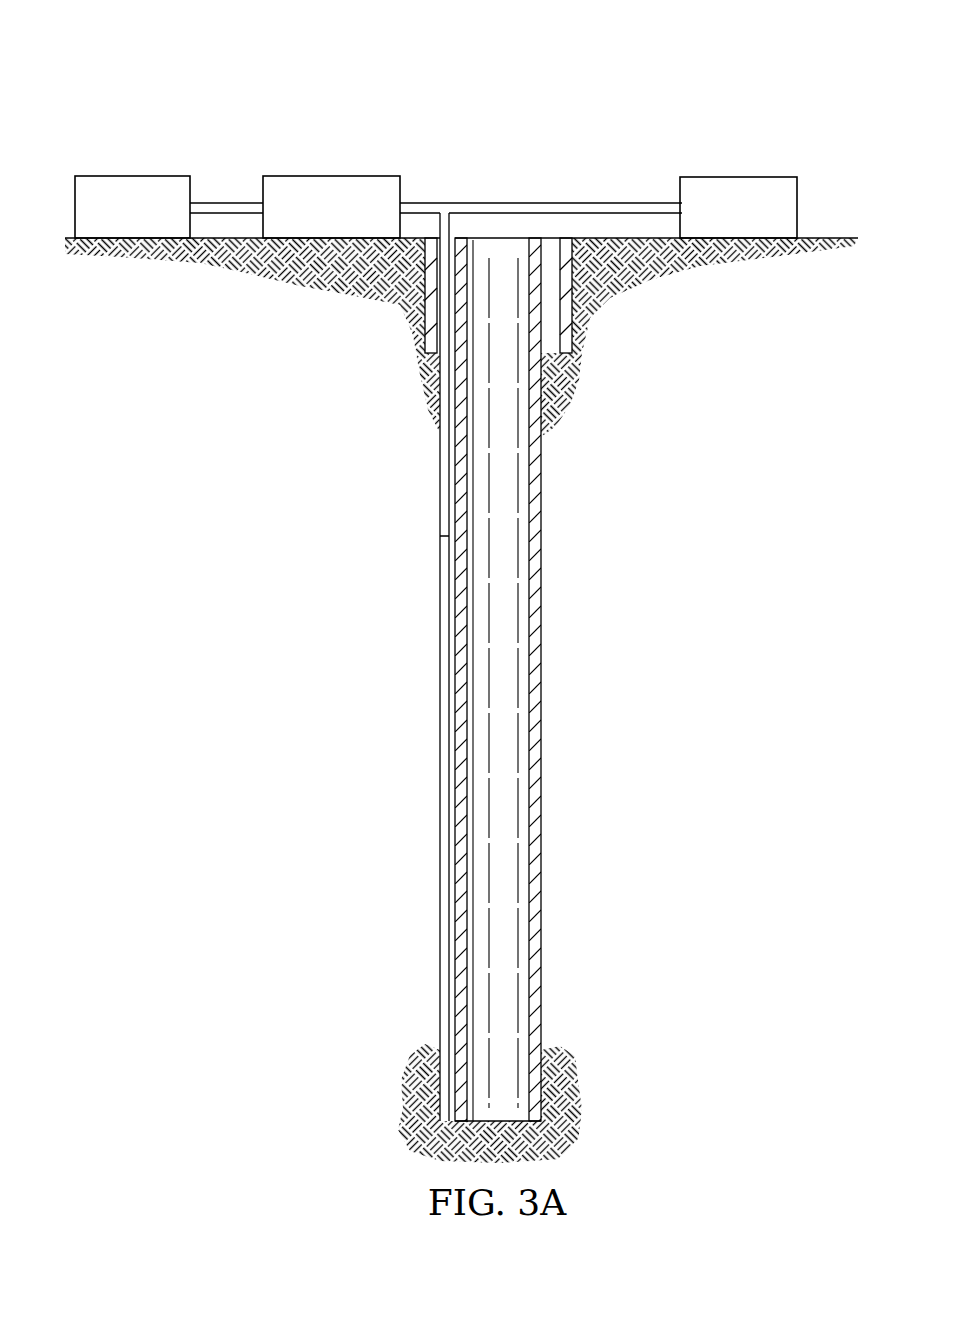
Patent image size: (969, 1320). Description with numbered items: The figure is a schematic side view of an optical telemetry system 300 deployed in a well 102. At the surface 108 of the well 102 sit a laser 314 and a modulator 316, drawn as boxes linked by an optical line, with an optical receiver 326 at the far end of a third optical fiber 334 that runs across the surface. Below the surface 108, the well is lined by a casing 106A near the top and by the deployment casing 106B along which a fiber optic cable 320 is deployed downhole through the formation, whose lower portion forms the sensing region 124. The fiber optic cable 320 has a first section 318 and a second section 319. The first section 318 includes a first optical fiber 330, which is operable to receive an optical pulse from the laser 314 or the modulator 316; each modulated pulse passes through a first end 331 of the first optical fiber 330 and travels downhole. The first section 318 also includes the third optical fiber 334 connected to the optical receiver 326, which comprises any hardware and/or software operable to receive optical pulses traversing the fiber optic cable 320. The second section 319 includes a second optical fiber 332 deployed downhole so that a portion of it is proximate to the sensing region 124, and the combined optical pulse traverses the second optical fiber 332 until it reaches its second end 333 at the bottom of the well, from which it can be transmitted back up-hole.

The optical telemetry system 300 is at (258, 78).
The well 102 is at (534, 130).
The laser 314 is at (132, 176).
The modulator 316 is at (331, 176).
The optical receiver 326 is at (738, 177).
The first end of the first optical fiber 331 is at (402, 203).
The third optical fiber 334 is at (600, 203).
The surface 108 is at (838, 238).
The casing 106A is at (424, 308).
The deployment casing 106B is at (534, 559).
The fiber optic cable 320 is at (426, 442).
The first section of the fiber optic cable 318 is at (442, 482).
The first optical fiber 330 is at (442, 521).
The second section of the fiber optic cable 319 is at (442, 597).
The second optical fiber 332 is at (442, 635).
The sensing region 124 is at (330, 974).
The second end of the second optical fiber 333 is at (440, 1110).